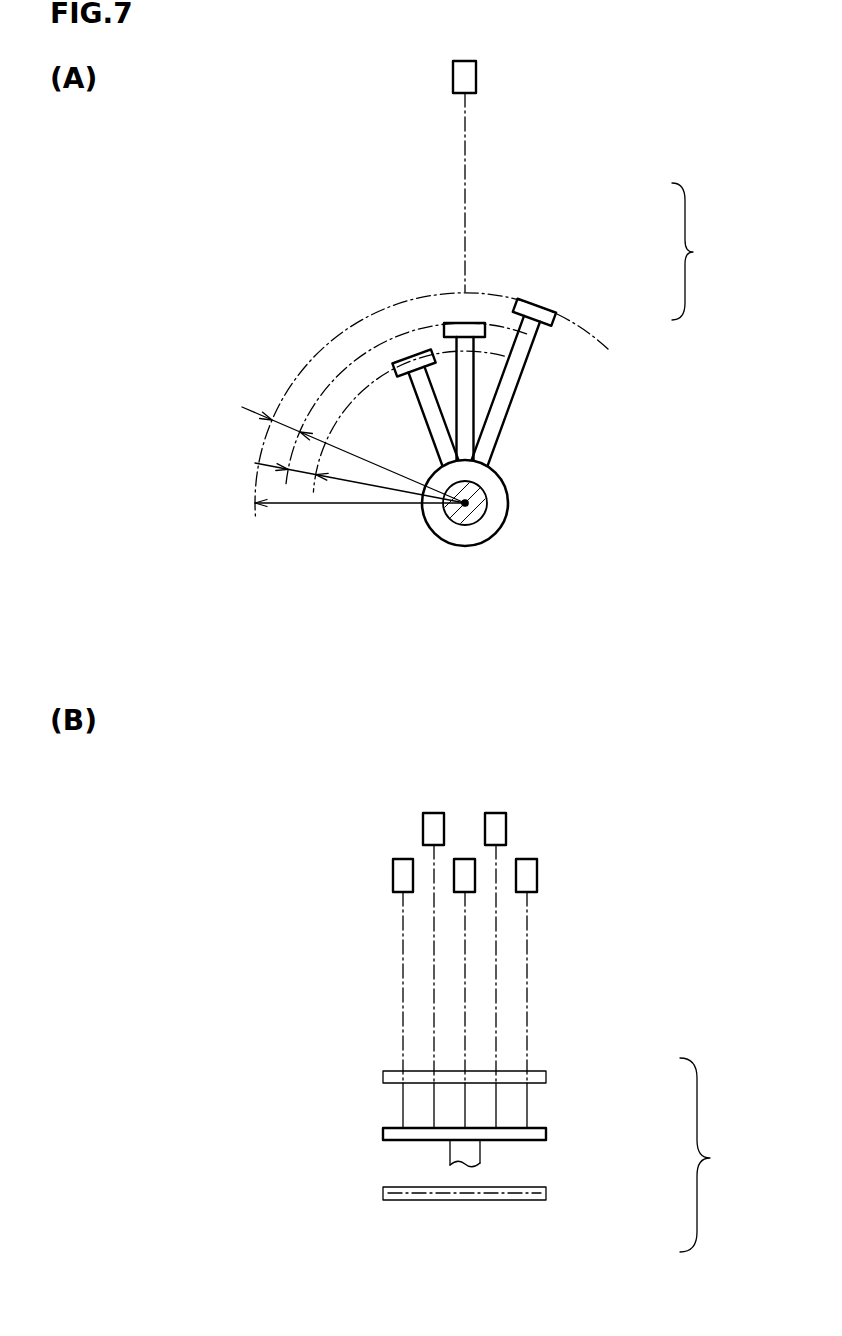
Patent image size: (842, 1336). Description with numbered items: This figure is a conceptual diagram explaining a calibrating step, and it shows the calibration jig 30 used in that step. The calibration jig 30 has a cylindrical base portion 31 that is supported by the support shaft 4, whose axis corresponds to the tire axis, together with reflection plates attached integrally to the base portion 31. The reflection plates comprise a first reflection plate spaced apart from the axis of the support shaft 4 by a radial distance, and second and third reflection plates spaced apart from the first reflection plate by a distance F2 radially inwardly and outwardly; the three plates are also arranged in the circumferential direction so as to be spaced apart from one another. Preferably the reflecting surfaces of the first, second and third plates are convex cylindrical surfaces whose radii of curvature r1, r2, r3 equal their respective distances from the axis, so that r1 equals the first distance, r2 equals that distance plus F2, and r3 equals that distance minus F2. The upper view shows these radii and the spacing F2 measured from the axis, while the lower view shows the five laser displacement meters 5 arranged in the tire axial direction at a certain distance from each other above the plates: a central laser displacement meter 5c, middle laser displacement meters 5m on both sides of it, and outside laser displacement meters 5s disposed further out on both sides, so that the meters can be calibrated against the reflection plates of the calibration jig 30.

The laser displacement meter 5 is at (472, 78).
The middle laser displacement meter 5m is at (446, 813).
The outside laser displacement meter 5s is at (392, 878).
The central laser displacement meter 5c is at (475, 877).
The calibration jig 30 is at (562, 406).
The cylindrical base portion 31 is at (498, 476).
The support shaft 4 is at (487, 502).
The radial spacing distance F2 is at (286, 422).
The radius of curvature of first reflection plate r1 is at (360, 458).
The radius of curvature of second reflection plate r2 is at (287, 512).
The radius of curvature of third reflection plate r3 is at (387, 489).